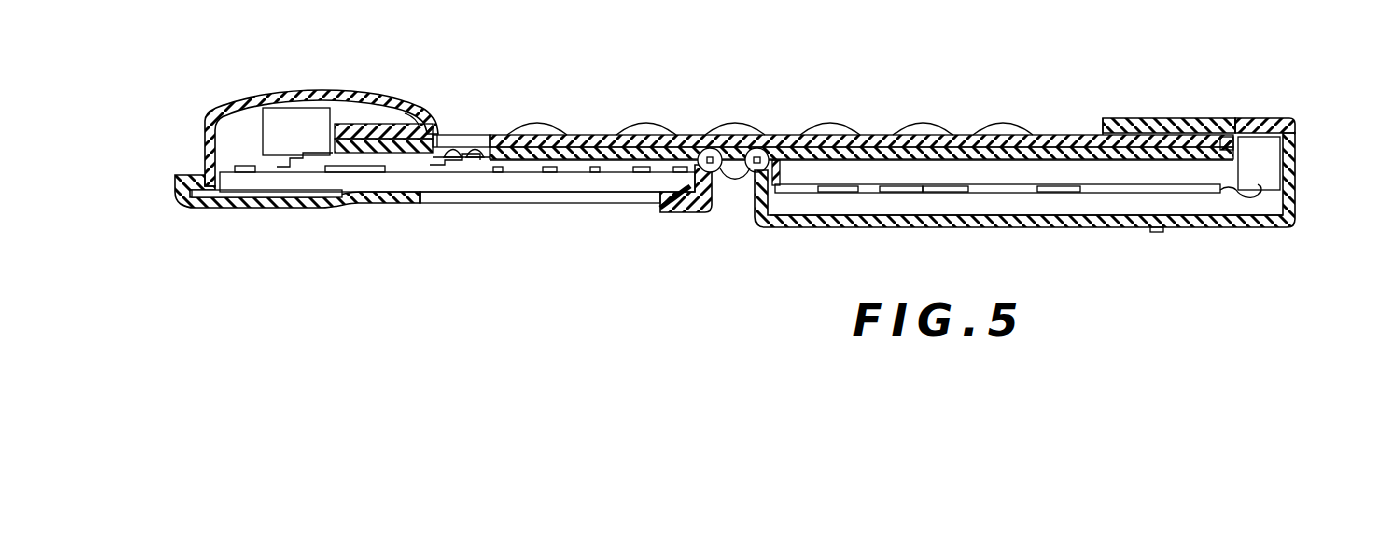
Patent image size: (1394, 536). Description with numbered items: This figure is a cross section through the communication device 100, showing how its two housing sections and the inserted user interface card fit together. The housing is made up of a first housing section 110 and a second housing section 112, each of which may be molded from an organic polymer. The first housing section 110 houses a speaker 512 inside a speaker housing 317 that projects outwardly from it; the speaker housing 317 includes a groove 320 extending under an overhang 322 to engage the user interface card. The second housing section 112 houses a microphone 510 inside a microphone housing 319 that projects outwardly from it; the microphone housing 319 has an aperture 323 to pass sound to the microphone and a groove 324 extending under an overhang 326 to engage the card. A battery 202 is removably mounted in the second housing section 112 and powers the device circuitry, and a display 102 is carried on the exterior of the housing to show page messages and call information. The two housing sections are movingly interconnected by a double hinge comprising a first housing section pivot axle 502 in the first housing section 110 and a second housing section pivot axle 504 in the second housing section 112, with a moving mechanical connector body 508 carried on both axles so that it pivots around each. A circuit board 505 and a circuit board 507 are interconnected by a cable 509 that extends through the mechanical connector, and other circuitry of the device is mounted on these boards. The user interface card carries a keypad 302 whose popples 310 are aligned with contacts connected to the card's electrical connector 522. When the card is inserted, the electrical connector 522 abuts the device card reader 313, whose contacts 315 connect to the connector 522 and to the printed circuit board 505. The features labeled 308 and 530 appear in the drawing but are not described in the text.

The communication device 100 is at (1297, 110).
The display 102 is at (540, 198).
The first housing section 110 is at (258, 92).
The second housing section 112 is at (1295, 215).
The battery 202 is at (1093, 214).
The keypad 302 is at (1003, 120).
The housing flange 308 is at (172, 172).
The popples 310 is at (567, 128).
The card reader 313 is at (481, 165).
The card reader contacts 315 is at (452, 146).
The speaker housing 317 is at (355, 91).
The microphone housing 319 is at (1237, 114).
The groove 320 is at (435, 133).
The overhang 322 is at (408, 106).
The aperture 323 is at (1257, 121).
The groove 324 is at (1103, 132).
The overhang 326 is at (1148, 118).
The first housing section pivot axle 502 is at (710, 163).
The second housing section pivot axle 504 is at (757, 165).
The circuit board 505 is at (410, 182).
The circuit board 507 is at (1182, 183).
The moving mechanical connector body 508 is at (718, 172).
The cable 509 is at (660, 204).
The microphone 510 is at (735, 200).
The speaker 512 is at (275, 130).
The electrical connector 522 is at (494, 150).
The plate 530 is at (230, 197).